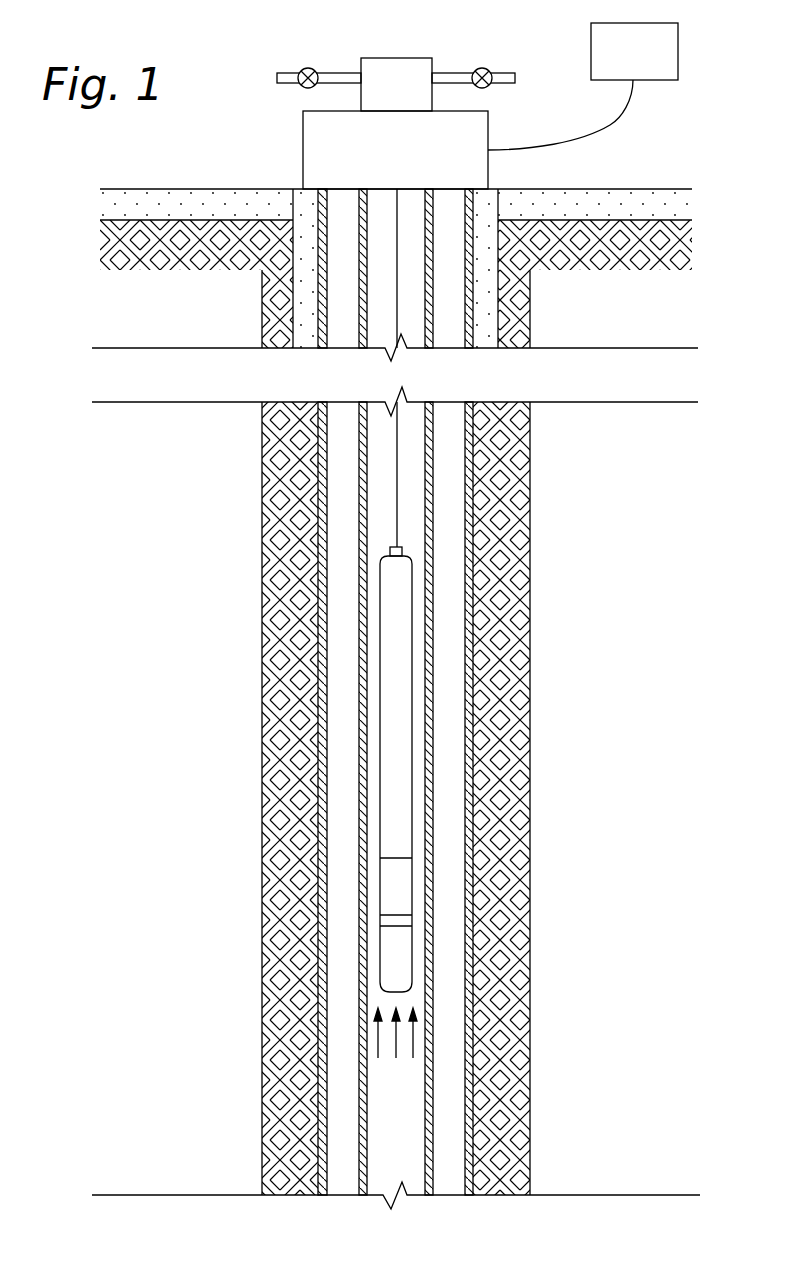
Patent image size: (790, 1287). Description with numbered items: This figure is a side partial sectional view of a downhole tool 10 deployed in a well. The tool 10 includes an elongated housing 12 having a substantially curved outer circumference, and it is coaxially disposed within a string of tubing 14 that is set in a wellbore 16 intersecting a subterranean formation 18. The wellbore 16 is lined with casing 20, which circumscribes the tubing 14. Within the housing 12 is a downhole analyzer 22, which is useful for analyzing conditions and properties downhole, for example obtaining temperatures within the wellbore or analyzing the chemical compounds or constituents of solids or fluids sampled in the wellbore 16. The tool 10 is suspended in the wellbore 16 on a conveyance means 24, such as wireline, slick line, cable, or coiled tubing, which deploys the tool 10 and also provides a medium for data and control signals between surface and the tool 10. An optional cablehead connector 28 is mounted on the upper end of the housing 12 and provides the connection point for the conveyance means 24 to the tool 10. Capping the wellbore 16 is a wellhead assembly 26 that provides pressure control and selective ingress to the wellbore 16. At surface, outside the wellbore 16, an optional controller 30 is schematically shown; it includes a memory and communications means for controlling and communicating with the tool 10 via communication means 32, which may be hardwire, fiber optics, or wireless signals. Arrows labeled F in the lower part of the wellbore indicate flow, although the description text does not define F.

The downhole tool 10 is at (485, 749).
The elongated housing 12 is at (412, 620).
The string of tubing 14 is at (433, 670).
The wellbore 16 is at (452, 718).
The subterranean formation 18 is at (500, 762).
The casing 20 is at (468, 806).
The downhole analyzer 22 is at (443, 917).
The conveyance means 24 is at (397, 470).
The wellhead assembly 26 is at (292, 127).
The cablehead connector 28 is at (390, 550).
The controller 30 is at (689, 32).
The communication means 32 is at (610, 125).
The fluid flow F is at (413, 1044).